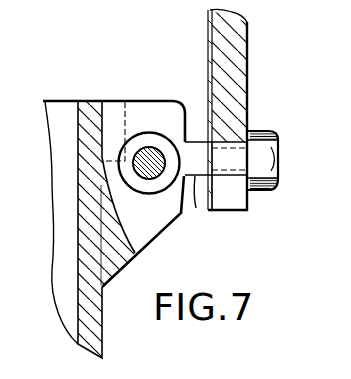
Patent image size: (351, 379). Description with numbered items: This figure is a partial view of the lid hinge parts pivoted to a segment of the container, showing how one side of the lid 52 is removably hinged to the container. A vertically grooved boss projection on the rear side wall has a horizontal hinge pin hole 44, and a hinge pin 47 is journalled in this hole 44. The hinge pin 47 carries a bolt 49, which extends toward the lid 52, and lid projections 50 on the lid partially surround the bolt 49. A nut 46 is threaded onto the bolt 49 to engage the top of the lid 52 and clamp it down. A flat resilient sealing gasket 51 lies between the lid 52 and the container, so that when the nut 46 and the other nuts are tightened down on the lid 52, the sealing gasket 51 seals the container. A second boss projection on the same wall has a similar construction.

The hinge pin hole 44 is at (152, 180).
The nut 46 is at (250, 131).
The hinge pin 47 is at (150, 152).
The bolt 49 is at (196, 208).
The lid projections 50 is at (228, 200).
The resilient sealing gasket 51 is at (208, 46).
The lid 52 is at (237, 50).